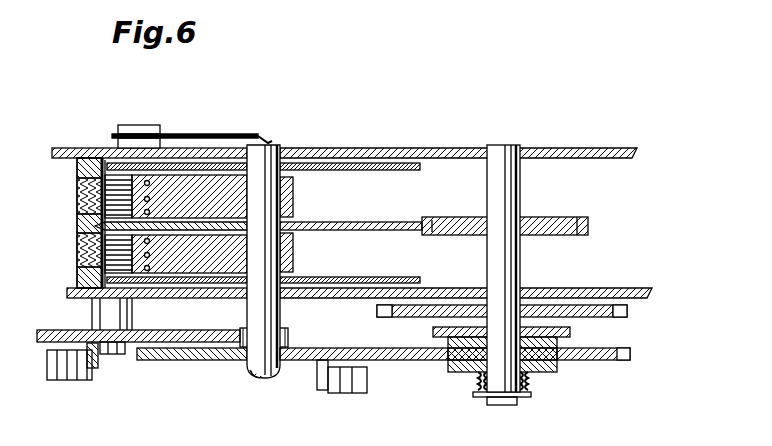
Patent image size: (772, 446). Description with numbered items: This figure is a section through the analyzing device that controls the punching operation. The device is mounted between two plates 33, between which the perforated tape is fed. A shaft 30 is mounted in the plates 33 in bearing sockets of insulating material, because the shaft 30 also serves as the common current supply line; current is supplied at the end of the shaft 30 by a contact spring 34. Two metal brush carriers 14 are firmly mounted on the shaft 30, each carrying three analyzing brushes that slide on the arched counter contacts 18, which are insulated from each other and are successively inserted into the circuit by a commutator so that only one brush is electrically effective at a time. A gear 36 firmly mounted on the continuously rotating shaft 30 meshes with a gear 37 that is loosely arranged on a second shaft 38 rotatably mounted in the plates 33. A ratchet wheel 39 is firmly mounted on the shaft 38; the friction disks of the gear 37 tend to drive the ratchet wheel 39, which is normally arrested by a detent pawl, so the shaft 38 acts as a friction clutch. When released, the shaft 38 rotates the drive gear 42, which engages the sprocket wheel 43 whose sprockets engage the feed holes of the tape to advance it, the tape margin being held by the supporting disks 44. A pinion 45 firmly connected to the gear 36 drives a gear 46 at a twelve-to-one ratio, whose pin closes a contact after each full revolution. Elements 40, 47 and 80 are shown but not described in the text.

The brush carrier 14 is at (297, 245).
The arched counter contact 18 is at (78, 195).
The shaft 30 is at (277, 143).
The plate 33 is at (618, 158).
The contact spring 34 is at (237, 135).
The gear 36 is at (170, 357).
The gear 37 is at (403, 360).
The shaft 38 is at (488, 142).
The ratchet wheel 39 is at (565, 337).
The bushing 40 is at (532, 367).
The drive gear 42 is at (562, 223).
The sprocket wheel 43 is at (373, 220).
The supporting disk 44 is at (113, 165).
The pinion 45 is at (285, 352).
The gear 46 is at (58, 330).
The block 47 is at (97, 370).
The plate 80 is at (617, 317).